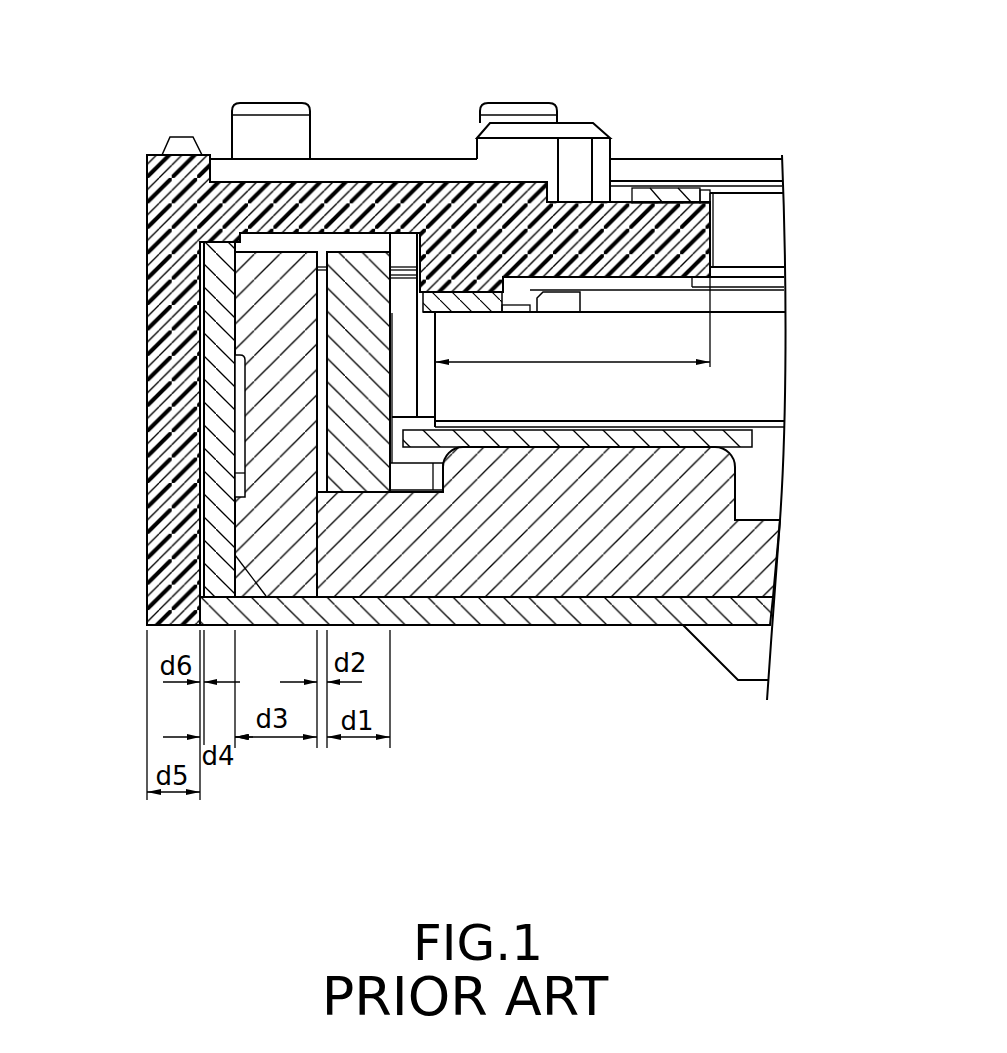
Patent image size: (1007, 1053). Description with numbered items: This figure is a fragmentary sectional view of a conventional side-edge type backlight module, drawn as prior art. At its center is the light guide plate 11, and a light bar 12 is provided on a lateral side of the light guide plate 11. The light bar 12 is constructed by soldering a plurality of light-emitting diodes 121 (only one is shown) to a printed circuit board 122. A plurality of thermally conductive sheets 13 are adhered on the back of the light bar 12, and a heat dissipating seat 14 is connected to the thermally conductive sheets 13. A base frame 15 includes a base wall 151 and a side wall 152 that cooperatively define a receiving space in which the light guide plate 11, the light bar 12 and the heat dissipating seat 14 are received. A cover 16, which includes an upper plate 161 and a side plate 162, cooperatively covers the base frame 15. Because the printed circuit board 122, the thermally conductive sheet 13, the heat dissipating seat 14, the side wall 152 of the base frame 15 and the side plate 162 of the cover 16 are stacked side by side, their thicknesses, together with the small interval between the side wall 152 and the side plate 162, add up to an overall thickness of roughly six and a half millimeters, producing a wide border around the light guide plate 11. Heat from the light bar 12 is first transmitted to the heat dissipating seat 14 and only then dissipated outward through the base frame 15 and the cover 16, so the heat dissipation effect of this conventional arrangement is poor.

The light guide plate 11 is at (764, 353).
The light bar 12 is at (404, 249).
The light-emitting diode 121 is at (404, 308).
The printed circuit board 122 is at (357, 274).
The thermally conductive sheet 13 is at (321, 256).
The heat dissipating seat 14 is at (253, 264).
The base frame 15 is at (505, 632).
The base wall 151 is at (590, 610).
The side wall 152 is at (216, 450).
The cover 16 is at (378, 340).
The upper plate 161 is at (523, 185).
The side plate 162 is at (155, 370).